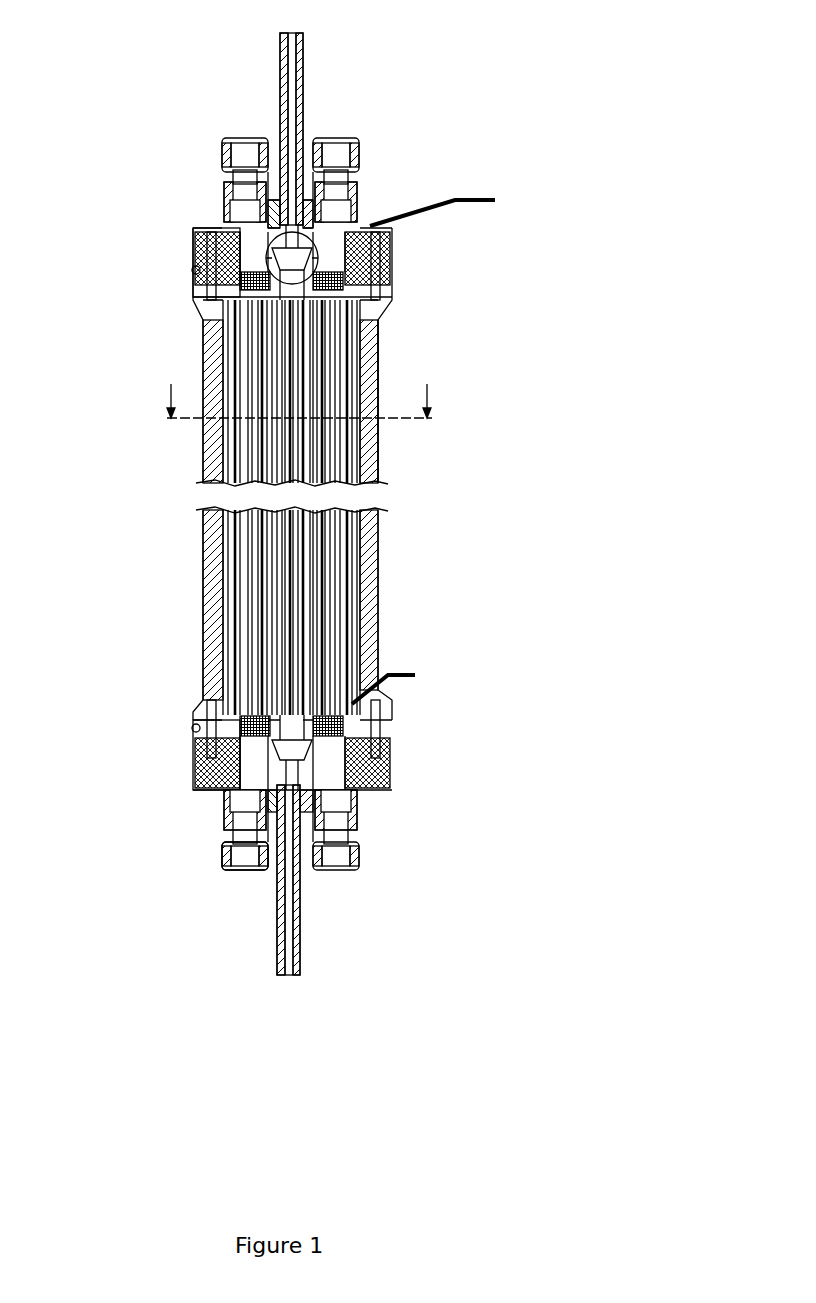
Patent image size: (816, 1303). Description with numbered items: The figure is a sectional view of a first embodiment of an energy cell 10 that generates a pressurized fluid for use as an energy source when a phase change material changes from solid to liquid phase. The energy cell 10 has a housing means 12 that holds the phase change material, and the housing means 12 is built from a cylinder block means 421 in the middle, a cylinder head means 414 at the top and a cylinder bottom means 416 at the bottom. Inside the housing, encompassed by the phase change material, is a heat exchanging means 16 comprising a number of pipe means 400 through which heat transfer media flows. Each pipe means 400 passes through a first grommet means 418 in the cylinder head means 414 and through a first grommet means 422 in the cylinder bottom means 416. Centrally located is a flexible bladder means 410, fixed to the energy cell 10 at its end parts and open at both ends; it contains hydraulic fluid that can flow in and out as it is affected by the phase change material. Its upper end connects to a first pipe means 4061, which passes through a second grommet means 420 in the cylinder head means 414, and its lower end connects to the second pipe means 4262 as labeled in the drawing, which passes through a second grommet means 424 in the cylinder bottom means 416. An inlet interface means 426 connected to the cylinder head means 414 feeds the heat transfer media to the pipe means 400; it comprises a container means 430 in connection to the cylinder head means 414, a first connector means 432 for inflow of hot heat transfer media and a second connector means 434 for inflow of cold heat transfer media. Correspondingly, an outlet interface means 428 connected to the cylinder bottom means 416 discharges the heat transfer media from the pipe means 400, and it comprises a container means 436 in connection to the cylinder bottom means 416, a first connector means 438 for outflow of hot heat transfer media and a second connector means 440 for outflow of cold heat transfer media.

The energy cell 10 is at (604, 62).
The housing means 12 is at (200, 620).
The heat exchanging means 16 is at (204, 296).
The pipe means 400 is at (352, 458).
The bladder means 410 is at (325, 535).
The cylinder head means 414 is at (388, 252).
The cylinder bottom means 416 is at (200, 760).
The first grommet means 418 is at (385, 266).
The second grommet means 420 is at (220, 248).
The cylinder block means 421 is at (380, 378).
The first grommet means 422 is at (395, 752).
The second grommet means 424 is at (216, 790).
The inlet interface means 426 is at (362, 192).
The outlet interface means 428 is at (368, 812).
The container means 430 is at (240, 214).
The first connector means 432 is at (232, 135).
The second connector means 434 is at (350, 135).
The container means 436 is at (222, 820).
The first connector means 438 is at (230, 878).
The second connector means 440 is at (348, 878).
The first pipe means 4061 is at (306, 72).
The lower central tube 4262 is at (272, 955).